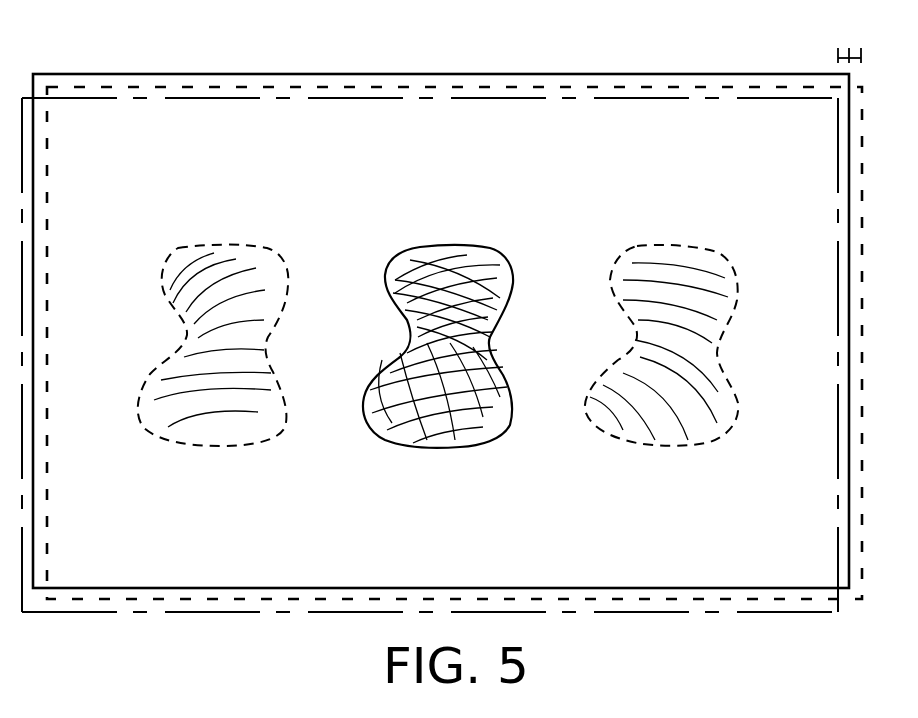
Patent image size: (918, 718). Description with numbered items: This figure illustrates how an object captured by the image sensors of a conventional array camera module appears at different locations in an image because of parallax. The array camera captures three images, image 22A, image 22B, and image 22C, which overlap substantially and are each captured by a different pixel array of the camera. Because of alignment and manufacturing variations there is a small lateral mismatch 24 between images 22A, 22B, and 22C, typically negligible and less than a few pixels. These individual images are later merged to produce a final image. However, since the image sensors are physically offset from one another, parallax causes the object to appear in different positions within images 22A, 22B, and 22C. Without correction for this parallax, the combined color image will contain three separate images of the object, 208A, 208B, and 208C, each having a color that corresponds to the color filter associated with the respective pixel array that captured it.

The image 22A is at (142, 98).
The image 22B is at (277, 74).
The image 22C is at (432, 81).
The lateral mismatch 24 is at (855, 48).
The image of object 208A is at (675, 245).
The image of object 208B is at (447, 245).
The image of object 208C is at (225, 246).